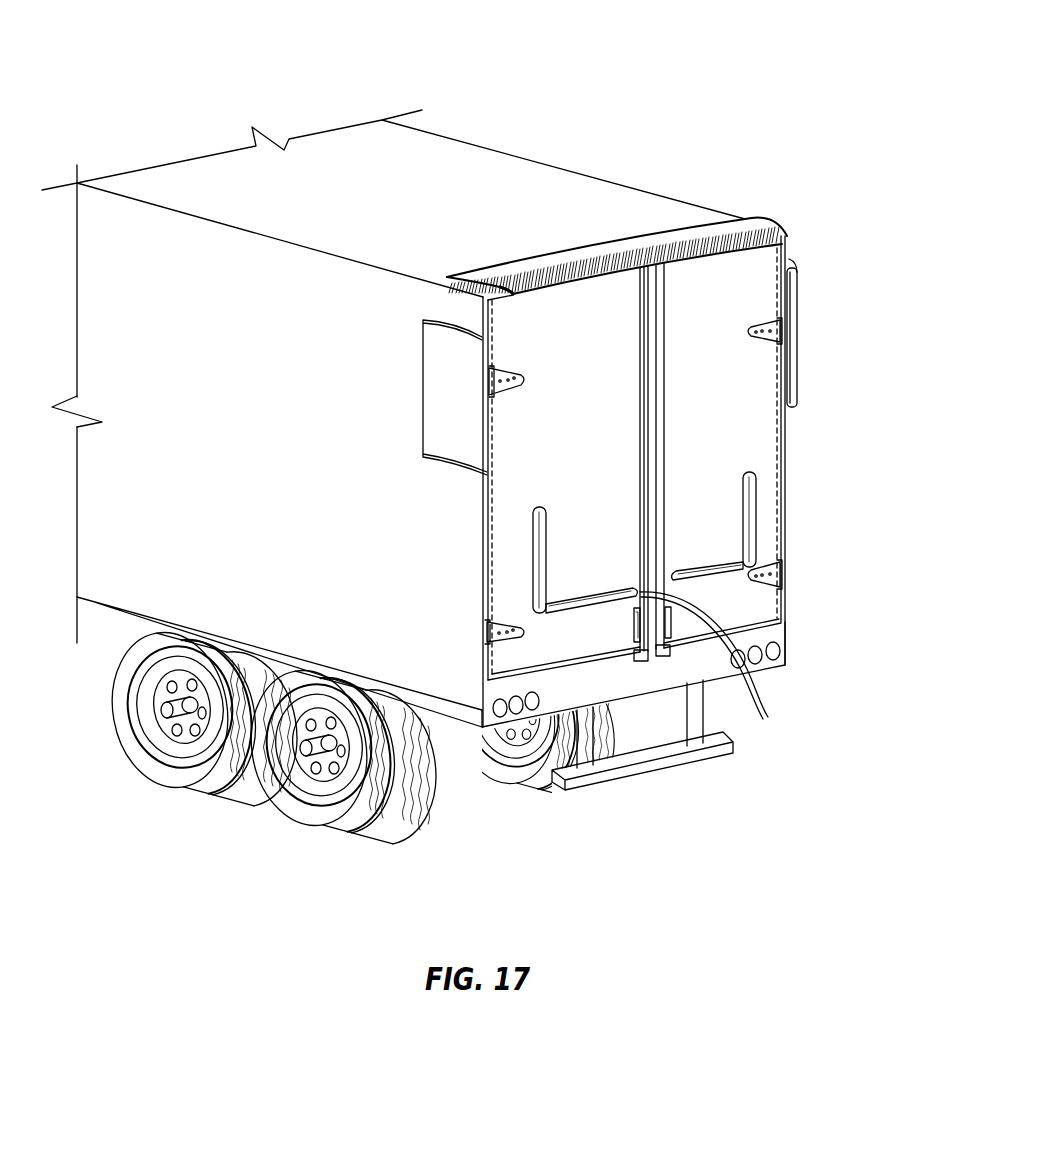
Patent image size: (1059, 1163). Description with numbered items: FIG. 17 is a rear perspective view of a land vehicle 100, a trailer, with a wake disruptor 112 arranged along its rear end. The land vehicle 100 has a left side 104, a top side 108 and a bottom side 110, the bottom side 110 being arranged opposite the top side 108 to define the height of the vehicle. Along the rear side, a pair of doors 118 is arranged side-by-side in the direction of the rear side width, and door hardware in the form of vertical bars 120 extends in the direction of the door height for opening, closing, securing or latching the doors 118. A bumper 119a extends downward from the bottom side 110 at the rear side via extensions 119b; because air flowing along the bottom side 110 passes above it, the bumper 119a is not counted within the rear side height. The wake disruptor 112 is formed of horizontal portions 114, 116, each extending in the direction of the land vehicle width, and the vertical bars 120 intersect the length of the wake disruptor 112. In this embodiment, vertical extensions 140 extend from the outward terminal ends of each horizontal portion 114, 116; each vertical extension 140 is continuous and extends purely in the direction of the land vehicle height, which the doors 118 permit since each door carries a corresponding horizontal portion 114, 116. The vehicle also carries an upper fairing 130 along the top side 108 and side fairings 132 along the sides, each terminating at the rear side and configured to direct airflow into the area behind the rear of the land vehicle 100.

The land vehicle 100 is at (702, 38).
The left side 104 is at (323, 497).
The top side 108 is at (432, 160).
The bottom side 110 is at (772, 668).
The wake disruptor 112 is at (760, 455).
The horizontal portion 114 is at (590, 588).
The horizontal portion 116 is at (712, 568).
The door 118 is at (608, 372).
The bumper 119a is at (648, 760).
The extensions 119b is at (703, 708).
The vertical bars 120 is at (728, 663).
The upper fairing 130 is at (743, 227).
The side fairing 132 is at (437, 392).
The vertical extension 140 is at (547, 517).